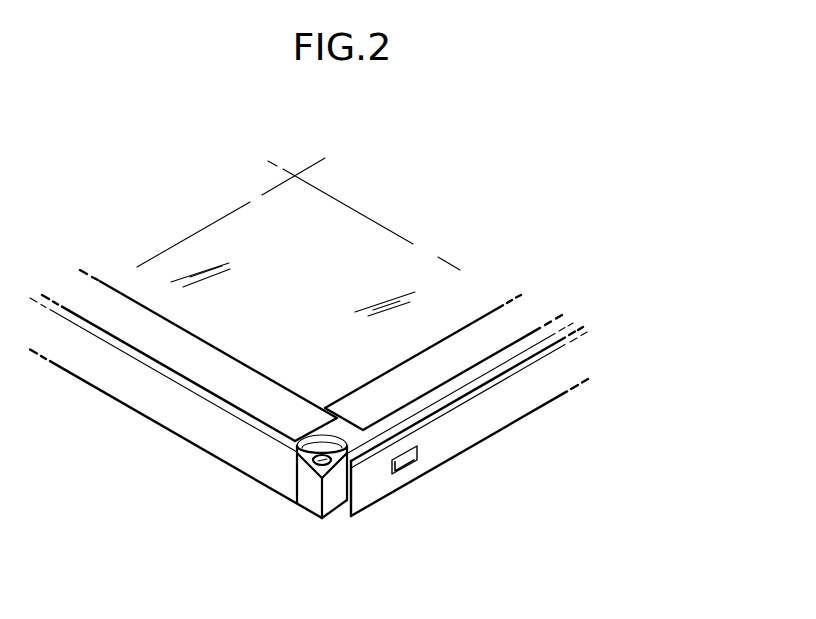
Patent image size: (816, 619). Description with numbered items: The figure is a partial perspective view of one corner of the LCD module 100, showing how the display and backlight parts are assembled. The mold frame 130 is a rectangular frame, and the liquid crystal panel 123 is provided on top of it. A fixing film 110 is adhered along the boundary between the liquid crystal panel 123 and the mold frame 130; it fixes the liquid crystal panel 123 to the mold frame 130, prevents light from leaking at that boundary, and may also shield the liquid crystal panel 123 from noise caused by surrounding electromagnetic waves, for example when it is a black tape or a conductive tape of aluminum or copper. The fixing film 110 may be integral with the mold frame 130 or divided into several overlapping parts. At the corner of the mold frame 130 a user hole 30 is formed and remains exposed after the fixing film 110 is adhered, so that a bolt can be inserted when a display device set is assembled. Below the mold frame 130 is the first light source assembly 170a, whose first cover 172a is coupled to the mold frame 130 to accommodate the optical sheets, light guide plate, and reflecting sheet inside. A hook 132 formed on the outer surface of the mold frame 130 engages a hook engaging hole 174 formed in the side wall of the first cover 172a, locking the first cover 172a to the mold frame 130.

The LCD module 100 is at (449, 169).
The liquid crystal panel 123 is at (213, 238).
The fixing film 110 is at (178, 348).
The mold frame 130 is at (268, 466).
The user hole 30 is at (316, 464).
The first light source assembly 170a is at (600, 428).
The first cover 172a is at (492, 415).
The hook engaging hole 174 is at (447, 459).
The hook 132 is at (400, 470).